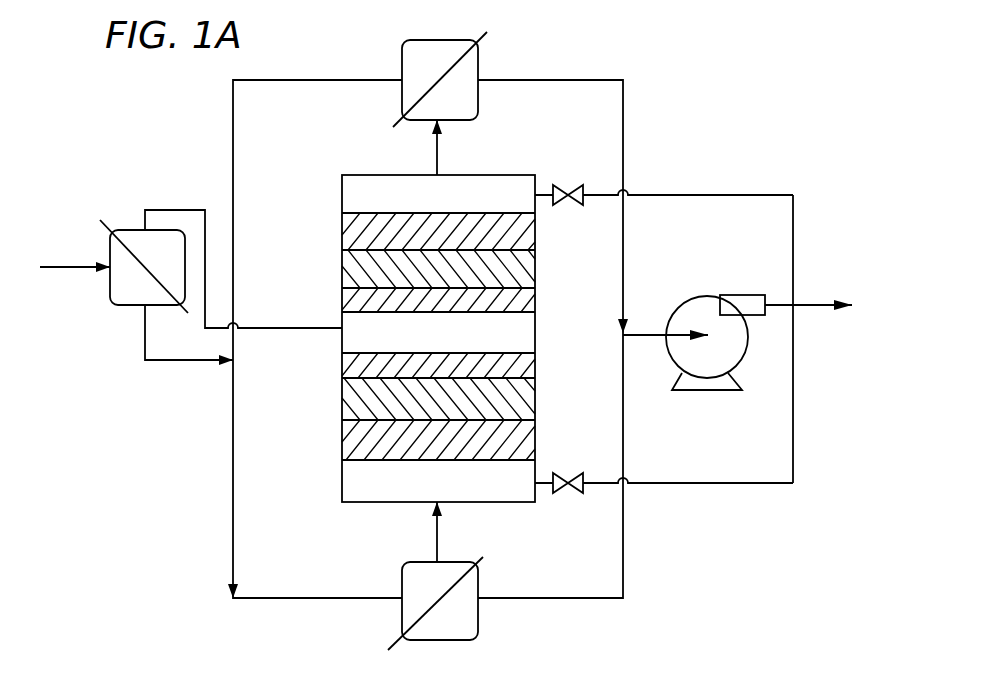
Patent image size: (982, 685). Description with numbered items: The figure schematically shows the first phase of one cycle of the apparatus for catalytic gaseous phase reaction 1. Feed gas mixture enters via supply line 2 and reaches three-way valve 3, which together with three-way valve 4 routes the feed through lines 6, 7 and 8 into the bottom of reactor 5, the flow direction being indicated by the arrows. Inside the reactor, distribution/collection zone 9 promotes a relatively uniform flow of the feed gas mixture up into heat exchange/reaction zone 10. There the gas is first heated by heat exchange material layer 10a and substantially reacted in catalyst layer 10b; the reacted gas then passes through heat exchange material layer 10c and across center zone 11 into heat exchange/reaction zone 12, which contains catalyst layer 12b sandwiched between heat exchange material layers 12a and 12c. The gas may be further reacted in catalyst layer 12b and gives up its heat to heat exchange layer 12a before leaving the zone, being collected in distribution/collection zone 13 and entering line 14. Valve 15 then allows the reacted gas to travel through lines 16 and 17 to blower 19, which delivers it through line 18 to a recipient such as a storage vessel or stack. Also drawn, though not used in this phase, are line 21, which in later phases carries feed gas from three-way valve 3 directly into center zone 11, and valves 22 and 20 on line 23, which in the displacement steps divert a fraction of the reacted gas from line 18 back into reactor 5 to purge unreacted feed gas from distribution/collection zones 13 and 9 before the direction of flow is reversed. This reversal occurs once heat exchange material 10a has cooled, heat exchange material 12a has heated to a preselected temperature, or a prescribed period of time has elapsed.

The apparatus for catalytic gaseous phase reaction 1 is at (160, 150).
The supply line 2 is at (52, 267).
The three-way valve 3 is at (131, 230).
The three-way valve 4 is at (478, 590).
The reactor 5 is at (365, 175).
The line 6 is at (180, 362).
The line 7 is at (233, 515).
The line 8 is at (437, 532).
The distribution/collection zone 9 is at (522, 490).
The heat exchange/reaction zone 10 is at (426, 405).
The heat exchange material layer 10a is at (342, 437).
The catalyst layer 10b is at (342, 400).
The heat exchange material layer 10c is at (342, 363).
The center zone 11 is at (515, 333).
The heat exchange/reaction zone 12 is at (426, 262).
The heat exchange material layer 12a is at (342, 222).
The catalyst layer 12b is at (342, 272).
The heat exchange material layer 12c is at (342, 297).
The distribution/collection zone 13 is at (502, 190).
The line 14 is at (437, 145).
The valve 15 is at (480, 62).
The line 16 is at (623, 130).
The line 17 is at (658, 310).
The line 18 is at (807, 313).
The blower 19 is at (728, 297).
The valve 20 is at (568, 490).
The line 21 is at (173, 210).
The valve 22 is at (570, 185).
The line 23 is at (688, 483).